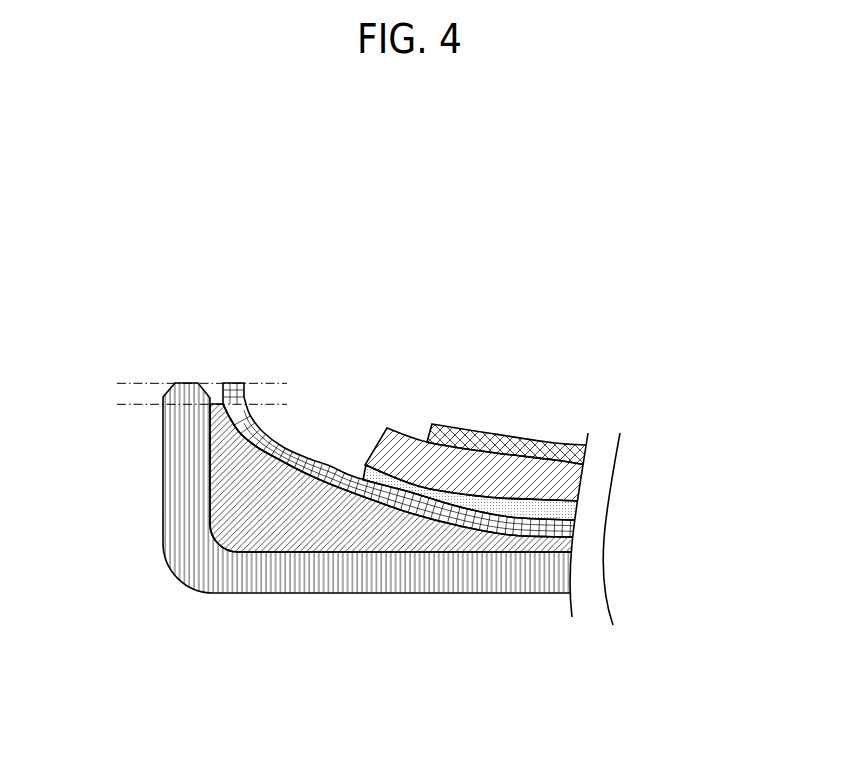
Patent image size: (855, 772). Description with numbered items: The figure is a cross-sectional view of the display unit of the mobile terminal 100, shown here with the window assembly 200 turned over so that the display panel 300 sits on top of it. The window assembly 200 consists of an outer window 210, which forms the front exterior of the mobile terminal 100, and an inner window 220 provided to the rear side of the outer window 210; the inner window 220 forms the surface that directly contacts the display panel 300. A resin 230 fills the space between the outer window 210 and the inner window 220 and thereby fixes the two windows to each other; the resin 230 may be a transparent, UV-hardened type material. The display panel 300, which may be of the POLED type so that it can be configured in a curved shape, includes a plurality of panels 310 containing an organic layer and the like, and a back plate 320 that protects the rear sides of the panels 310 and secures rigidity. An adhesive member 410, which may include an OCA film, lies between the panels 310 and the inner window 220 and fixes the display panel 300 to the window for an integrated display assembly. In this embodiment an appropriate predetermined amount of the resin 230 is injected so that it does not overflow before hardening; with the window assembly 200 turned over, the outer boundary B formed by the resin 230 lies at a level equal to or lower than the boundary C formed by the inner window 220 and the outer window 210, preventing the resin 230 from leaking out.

The mobile terminal 100 is at (76, 323).
The window assembly 200 is at (722, 540).
The outer window 210 is at (550, 575).
The inner window 220 is at (560, 531).
The resin 230 is at (547, 547).
The display panel 300 is at (717, 413).
The panels 310 is at (565, 478).
The back plate 320 is at (568, 452).
The adhesive member 410 is at (560, 510).